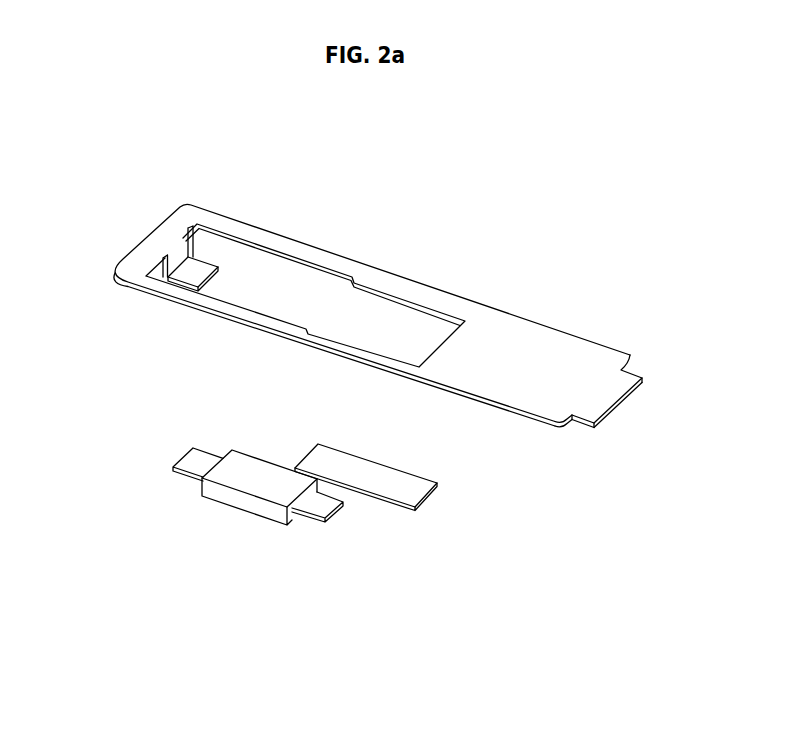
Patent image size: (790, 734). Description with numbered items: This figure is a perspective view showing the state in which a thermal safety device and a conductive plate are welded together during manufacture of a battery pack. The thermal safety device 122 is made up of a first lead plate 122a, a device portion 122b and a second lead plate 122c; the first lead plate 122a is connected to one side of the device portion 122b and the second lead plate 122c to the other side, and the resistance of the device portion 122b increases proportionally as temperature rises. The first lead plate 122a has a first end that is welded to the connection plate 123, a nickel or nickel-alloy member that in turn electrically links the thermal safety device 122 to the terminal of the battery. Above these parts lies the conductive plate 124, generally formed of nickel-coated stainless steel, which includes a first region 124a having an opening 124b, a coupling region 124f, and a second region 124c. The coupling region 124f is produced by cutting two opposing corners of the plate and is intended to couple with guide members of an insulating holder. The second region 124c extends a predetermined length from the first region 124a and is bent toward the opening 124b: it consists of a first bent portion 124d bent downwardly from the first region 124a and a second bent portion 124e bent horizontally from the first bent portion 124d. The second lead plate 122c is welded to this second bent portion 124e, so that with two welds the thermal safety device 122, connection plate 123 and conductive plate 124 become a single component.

The thermal safety device 122 is at (207, 496).
The first lead plate 122a is at (317, 508).
The device portion 122b is at (250, 487).
The second lead plate 122c is at (195, 468).
The connection plate 123 is at (378, 470).
The conductive plate 124 is at (368, 267).
The first region 124a is at (334, 311).
The opening 124b is at (377, 308).
The second region 124c is at (188, 198).
The first bent portion 124d is at (177, 255).
The second bent portion 124e is at (202, 267).
The coupling region 124f is at (633, 370).